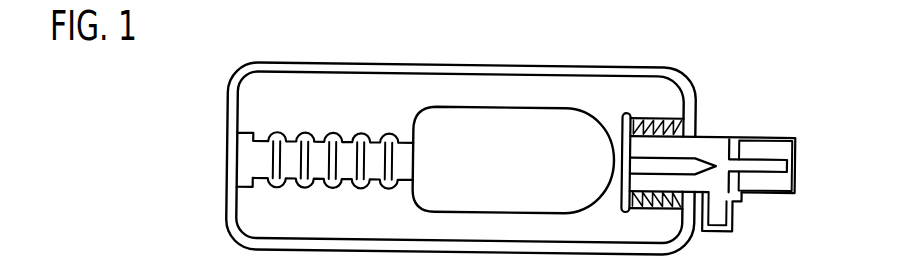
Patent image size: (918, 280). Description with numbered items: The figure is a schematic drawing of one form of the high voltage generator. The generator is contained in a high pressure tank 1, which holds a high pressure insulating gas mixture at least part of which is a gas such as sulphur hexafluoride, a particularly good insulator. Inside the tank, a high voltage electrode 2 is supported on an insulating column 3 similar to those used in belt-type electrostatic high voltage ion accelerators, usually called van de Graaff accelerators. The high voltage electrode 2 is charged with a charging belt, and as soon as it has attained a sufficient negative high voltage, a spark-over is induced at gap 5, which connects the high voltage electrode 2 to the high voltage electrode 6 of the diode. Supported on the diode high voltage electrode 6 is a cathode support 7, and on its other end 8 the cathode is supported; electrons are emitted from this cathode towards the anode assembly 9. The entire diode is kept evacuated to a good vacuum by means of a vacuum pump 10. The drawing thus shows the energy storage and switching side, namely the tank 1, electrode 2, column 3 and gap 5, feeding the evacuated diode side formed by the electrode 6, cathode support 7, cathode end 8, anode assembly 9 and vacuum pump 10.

The high pressure tank 1 is at (395, 65).
The high voltage electrode 2 is at (471, 108).
The insulating column 3 is at (333, 134).
The gap 5 is at (618, 148).
The high voltage electrode of the diode 6 is at (627, 111).
The cathode support 7 is at (668, 155).
The other end of the cathode support 8 is at (731, 153).
The anode assembly 9 is at (742, 154).
The vacuum pump 10 is at (733, 219).